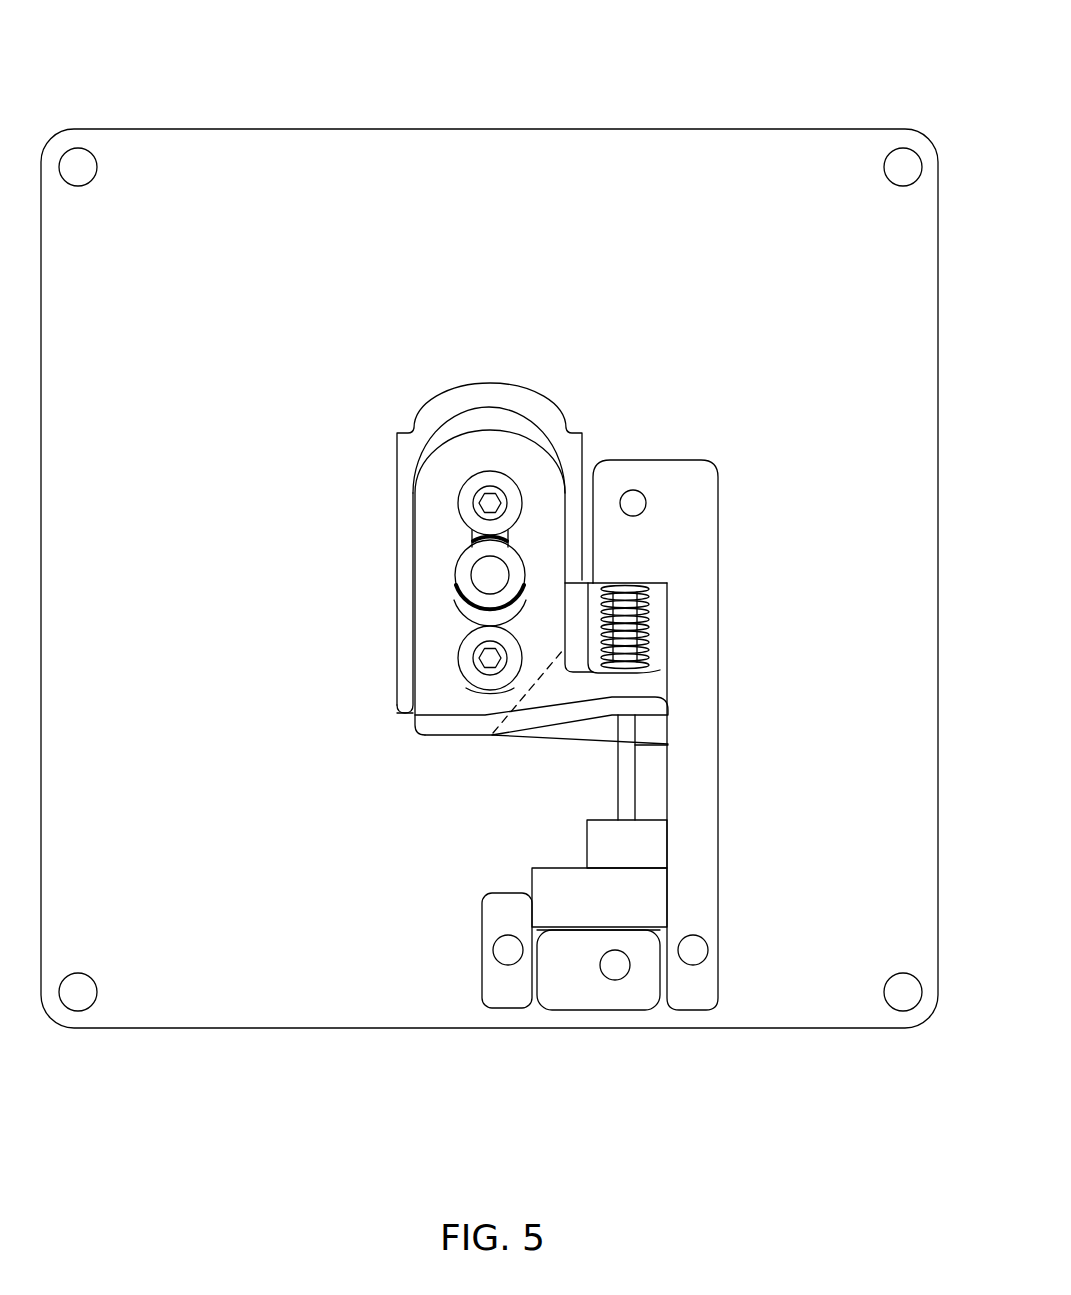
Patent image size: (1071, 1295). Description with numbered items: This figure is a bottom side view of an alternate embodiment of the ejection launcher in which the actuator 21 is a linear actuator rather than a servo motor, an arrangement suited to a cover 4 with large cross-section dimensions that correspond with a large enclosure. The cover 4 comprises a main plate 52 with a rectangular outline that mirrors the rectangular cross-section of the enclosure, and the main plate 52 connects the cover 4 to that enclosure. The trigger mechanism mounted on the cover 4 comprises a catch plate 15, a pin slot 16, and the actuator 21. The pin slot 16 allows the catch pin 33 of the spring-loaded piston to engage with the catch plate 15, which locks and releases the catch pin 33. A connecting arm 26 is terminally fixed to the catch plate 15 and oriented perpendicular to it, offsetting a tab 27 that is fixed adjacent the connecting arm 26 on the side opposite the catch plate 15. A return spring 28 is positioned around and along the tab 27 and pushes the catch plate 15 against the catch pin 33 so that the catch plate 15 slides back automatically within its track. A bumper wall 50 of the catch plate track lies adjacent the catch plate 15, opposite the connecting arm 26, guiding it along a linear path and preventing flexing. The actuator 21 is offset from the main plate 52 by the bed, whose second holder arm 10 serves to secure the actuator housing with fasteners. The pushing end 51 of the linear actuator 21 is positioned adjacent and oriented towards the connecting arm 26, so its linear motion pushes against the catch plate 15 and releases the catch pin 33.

The cover 4 is at (486, 514).
The main plate 52 is at (622, 137).
The second holder arm 10 is at (715, 853).
The catch plate 15 is at (431, 457).
The pin slot 16 is at (468, 540).
The catch pin 33 is at (453, 572).
The return spring 28 is at (630, 585).
The tab 27 is at (646, 656).
The connecting arm 26 is at (563, 716).
The pushing end 51 is at (630, 711).
The actuator 21 is at (530, 867).
The bumper wall 50 is at (407, 720).